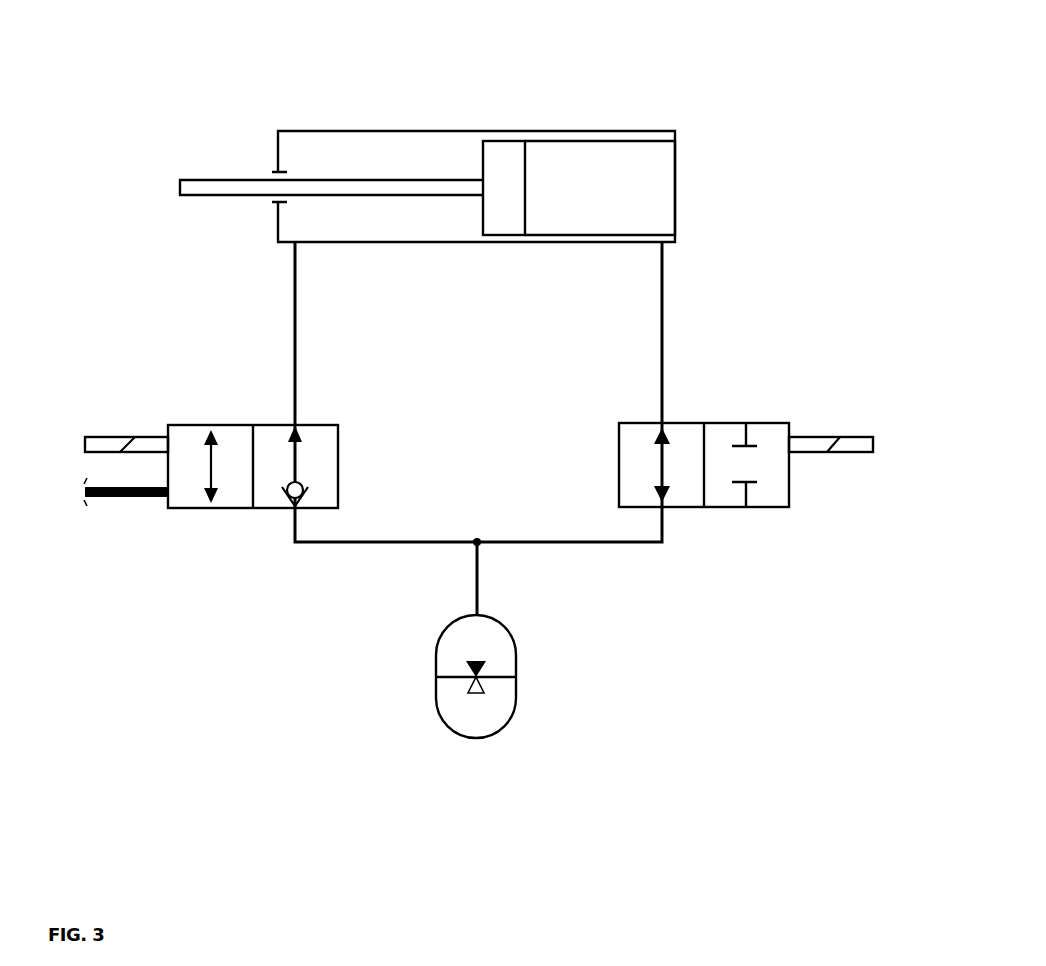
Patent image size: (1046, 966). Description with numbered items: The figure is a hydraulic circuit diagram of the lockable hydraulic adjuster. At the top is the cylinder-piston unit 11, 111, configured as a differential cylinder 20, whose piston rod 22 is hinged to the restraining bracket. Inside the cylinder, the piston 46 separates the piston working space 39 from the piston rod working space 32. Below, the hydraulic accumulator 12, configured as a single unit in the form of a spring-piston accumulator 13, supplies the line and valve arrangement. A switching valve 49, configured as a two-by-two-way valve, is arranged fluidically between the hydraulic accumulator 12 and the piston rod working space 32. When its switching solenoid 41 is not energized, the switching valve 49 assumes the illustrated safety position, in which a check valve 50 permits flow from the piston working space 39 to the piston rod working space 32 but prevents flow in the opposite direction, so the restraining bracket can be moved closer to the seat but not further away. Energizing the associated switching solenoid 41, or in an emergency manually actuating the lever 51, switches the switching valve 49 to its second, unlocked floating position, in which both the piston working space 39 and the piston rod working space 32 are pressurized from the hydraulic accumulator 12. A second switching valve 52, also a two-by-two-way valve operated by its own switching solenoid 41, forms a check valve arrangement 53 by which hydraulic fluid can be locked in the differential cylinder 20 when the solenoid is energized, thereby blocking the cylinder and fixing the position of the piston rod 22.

The cylinder-piston unit 11 is at (495, 128).
The cylinder-piston unit 111 is at (495, 128).
The differential cylinder 20 is at (633, 113).
The piston rod 22 is at (228, 185).
The piston rod working space 32 is at (329, 157).
The piston 46 is at (502, 150).
The piston working space 39 is at (591, 147).
The switching solenoid 41 is at (112, 438).
The switching valve 49 is at (197, 508).
The check valve 50 is at (277, 494).
The lever 51 is at (123, 497).
The second switching valve 52 is at (679, 507).
The check valve arrangement 53 is at (753, 525).
The hydraulic accumulator 12 is at (427, 690).
The spring-piston accumulator 13 is at (425, 712).